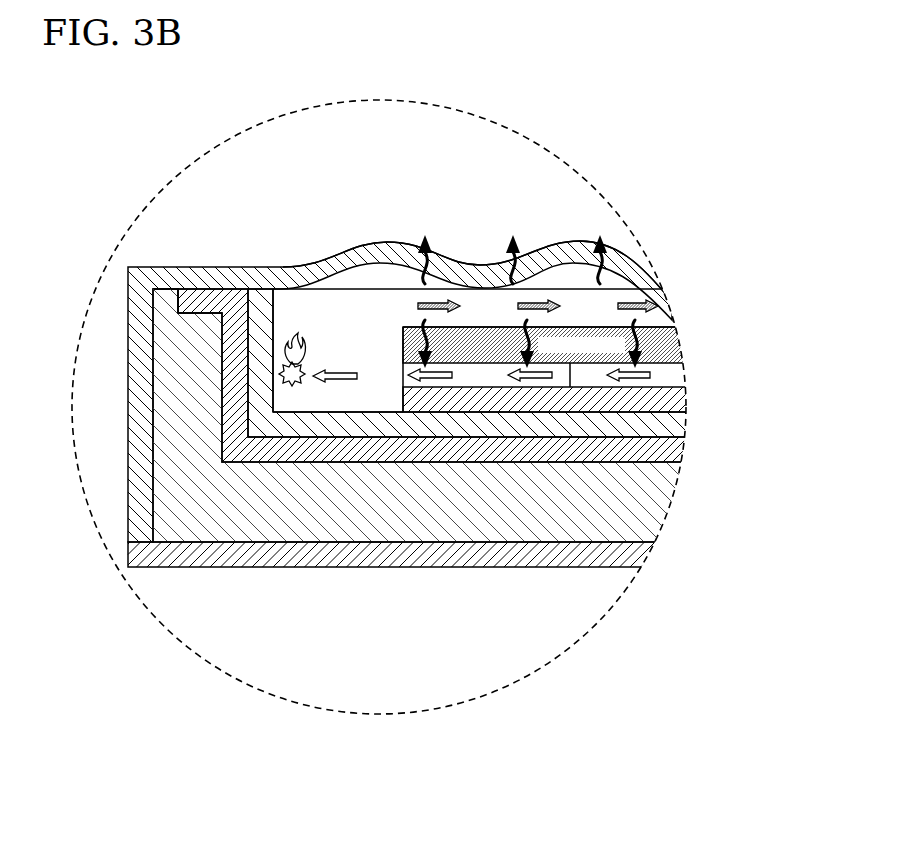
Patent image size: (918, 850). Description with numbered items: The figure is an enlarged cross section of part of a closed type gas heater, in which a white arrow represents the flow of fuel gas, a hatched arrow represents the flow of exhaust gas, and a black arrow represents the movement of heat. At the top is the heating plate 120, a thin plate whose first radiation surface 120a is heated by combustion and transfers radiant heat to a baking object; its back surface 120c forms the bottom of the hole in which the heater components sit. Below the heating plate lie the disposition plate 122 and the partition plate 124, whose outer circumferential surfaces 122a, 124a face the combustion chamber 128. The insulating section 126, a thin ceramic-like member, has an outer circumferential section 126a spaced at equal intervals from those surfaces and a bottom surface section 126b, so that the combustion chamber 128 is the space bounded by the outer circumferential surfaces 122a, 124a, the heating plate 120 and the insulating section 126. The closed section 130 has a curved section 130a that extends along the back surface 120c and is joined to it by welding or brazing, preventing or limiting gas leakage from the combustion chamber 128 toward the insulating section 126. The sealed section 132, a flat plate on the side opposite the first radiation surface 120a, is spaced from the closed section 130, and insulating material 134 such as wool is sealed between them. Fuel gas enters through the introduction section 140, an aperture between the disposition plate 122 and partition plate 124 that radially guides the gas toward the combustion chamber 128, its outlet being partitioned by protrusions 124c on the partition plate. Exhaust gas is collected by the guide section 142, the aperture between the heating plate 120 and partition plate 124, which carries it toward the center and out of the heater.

The heating plate 120 is at (657, 277).
The first radiation surface 120a is at (488, 265).
The back surface 120c is at (165, 297).
The disposition plate 122 is at (672, 405).
The outer circumferential surface 122a is at (402, 393).
The partition plate 124 is at (672, 347).
The outer circumferential surface 124a is at (403, 327).
The protrusions 124c is at (403, 345).
The insulating section 126 is at (672, 430).
The outer circumferential section 126a is at (273, 302).
The bottom surface section 126b is at (342, 413).
The combustion chamber 128 is at (355, 360).
The closed section 130 is at (672, 451).
The curved section 130a is at (193, 314).
The sealed section 132 is at (638, 560).
The insulating material 134 is at (645, 500).
The introduction section 140 is at (667, 377).
The guide section 142 is at (662, 318).